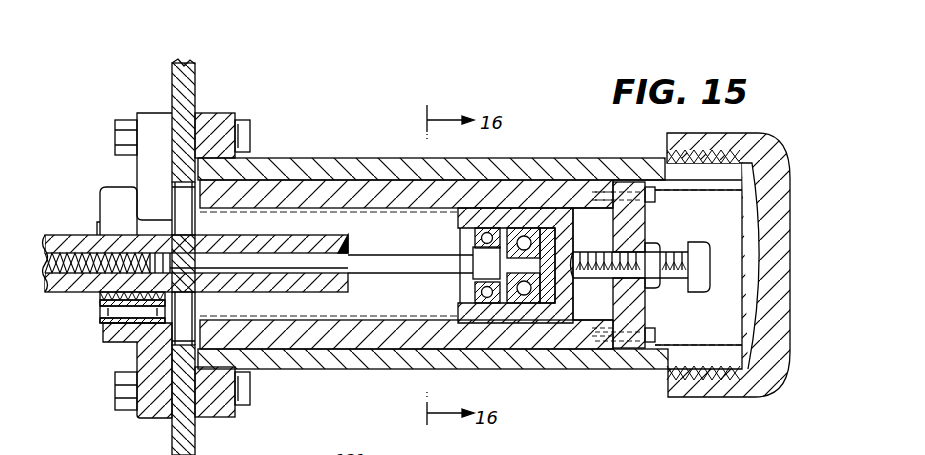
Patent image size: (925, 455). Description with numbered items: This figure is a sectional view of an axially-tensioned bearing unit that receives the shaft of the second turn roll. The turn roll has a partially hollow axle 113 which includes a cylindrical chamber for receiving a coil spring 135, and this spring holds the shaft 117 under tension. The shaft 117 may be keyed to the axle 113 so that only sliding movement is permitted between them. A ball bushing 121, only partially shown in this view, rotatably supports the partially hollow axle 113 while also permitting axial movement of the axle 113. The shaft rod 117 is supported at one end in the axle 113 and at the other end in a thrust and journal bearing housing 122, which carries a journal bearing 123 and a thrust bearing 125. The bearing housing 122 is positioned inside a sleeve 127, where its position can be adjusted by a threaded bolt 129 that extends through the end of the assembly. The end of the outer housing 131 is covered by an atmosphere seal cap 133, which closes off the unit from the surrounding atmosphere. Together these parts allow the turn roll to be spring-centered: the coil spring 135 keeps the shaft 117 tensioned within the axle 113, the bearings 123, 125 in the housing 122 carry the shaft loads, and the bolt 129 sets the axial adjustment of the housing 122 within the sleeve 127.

The partially hollow axle 113 is at (58, 235).
The shaft 117 is at (415, 256).
The ball bushing 121 is at (107, 308).
The thrust and journal bearing housing 122 is at (532, 217).
The journal bearing 123 is at (482, 285).
The thrust bearing 125 is at (540, 248).
The sleeve 127 is at (305, 188).
The threaded bolt 129 is at (683, 240).
The outer housing 131 is at (625, 158).
The atmosphere seal cap 133 is at (745, 390).
The coil spring 135 is at (62, 293).